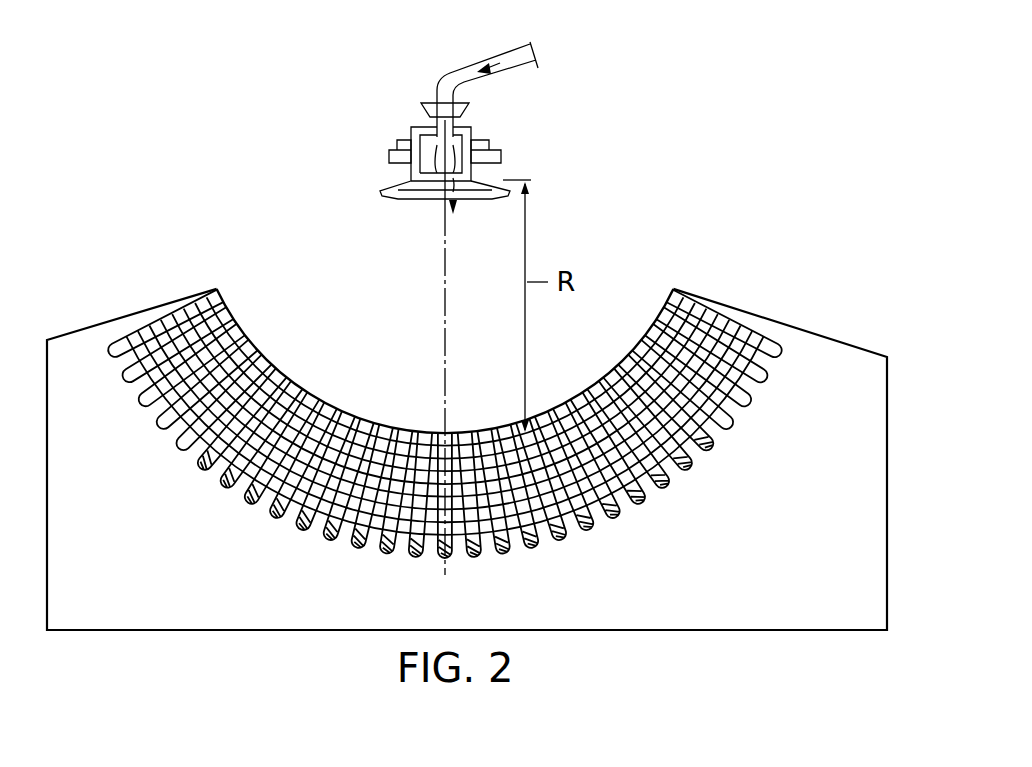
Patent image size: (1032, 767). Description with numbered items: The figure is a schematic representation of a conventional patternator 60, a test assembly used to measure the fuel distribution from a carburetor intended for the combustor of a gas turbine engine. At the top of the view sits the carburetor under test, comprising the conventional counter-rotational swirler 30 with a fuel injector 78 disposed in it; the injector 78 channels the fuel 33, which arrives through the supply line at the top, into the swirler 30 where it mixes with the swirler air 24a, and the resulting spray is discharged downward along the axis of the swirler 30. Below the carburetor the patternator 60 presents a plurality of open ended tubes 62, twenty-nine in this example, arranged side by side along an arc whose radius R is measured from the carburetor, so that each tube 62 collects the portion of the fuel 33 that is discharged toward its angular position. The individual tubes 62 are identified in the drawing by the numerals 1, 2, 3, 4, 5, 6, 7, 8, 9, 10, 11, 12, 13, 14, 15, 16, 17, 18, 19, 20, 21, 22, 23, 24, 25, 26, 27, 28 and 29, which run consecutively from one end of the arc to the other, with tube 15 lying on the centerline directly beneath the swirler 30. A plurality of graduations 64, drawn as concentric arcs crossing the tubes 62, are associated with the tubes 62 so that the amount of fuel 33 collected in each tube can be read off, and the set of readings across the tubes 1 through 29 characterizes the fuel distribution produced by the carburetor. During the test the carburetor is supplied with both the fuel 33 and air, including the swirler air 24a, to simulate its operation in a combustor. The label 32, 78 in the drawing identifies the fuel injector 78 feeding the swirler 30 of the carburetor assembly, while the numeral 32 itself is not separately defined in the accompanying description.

The tube 1 is at (421, 340).
The tube 2 is at (433, 356).
The tube 3 is at (422, 387).
The tube 4 is at (433, 396).
The tube 5 is at (424, 426).
The tube 6 is at (433, 432).
The tube 7 is at (428, 459).
The tube 8 is at (435, 462).
The tube 9 is at (431, 490).
The tube 10 is at (431, 486).
The tube 11 is at (432, 512).
The tube 12 is at (435, 504).
The tube 13 is at (434, 523).
The tube 14 is at (440, 515).
The tube 15 is at (452, 530).
The tube 16 is at (451, 515).
The tube 17 is at (454, 528).
The tube 18 is at (454, 507).
The tube 19 is at (461, 516).
The tube 20 is at (457, 491).
The tube 21 is at (469, 497).
The tube 22 is at (462, 467).
The tube 23 is at (477, 468).
The tube 24 is at (464, 436).
The tube 25 is at (481, 433).
The tube 26 is at (465, 399).
The tube 27 is at (487, 389).
The tube 28 is at (469, 357).
The tube 29 is at (490, 343).
The counter-rotational swirler 30 is at (382, 159).
The feed pipe 32 is at (350, 295).
The fuel injector 78 is at (350, 295).
The fuel 33 is at (503, 62).
The swirler air 24a is at (520, 152).
The patternator 60 is at (601, 168).
The open ended tubes 62 is at (676, 283).
The graduations 64 is at (719, 295).